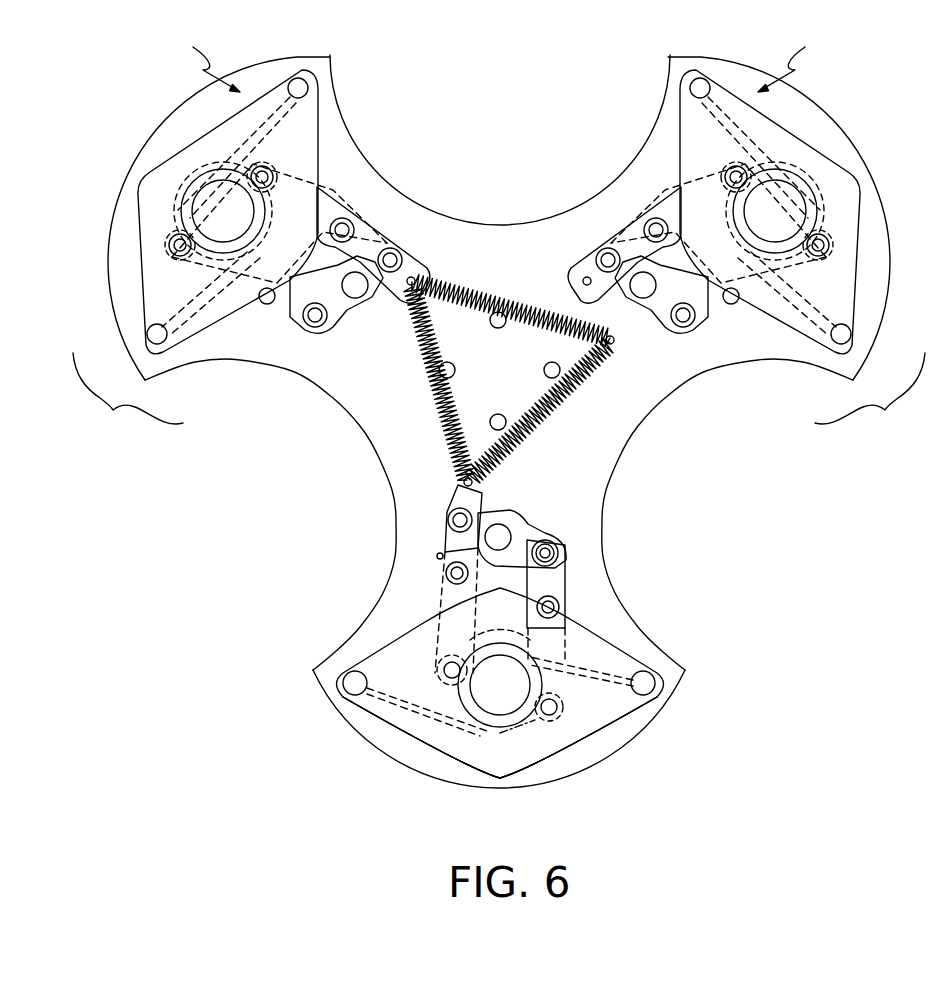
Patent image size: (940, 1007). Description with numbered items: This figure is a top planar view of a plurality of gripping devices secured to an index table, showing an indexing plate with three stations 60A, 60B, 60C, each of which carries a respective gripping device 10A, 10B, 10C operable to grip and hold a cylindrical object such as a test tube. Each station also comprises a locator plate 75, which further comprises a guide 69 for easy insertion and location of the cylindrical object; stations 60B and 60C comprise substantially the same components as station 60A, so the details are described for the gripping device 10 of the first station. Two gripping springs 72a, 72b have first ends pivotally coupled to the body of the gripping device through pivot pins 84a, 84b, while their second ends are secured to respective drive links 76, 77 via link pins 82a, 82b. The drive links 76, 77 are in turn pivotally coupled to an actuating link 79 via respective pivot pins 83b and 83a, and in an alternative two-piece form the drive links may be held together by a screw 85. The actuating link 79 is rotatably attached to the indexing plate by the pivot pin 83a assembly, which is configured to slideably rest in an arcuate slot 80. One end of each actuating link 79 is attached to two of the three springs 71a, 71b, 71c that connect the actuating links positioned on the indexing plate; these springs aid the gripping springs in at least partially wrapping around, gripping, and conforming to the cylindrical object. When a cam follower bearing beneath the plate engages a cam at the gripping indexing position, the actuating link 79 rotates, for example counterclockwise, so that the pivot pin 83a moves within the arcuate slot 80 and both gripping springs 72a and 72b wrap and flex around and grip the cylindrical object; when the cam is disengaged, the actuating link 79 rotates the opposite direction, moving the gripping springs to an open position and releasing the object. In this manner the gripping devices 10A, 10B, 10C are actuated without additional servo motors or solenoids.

The gripping device 10 is at (284, 522).
The gripping device 10A is at (366, 722).
The gripping device 10B is at (283, 189).
The gripping device 10C is at (716, 189).
The station 60A is at (745, 607).
The station 60B is at (234, 363).
The station 60C is at (763, 363).
The guide 69 is at (497, 735).
The spring 71a is at (425, 383).
The spring 71b is at (530, 300).
The spring 71c is at (553, 418).
The gripping spring 72a is at (400, 720).
The gripping spring 72b is at (600, 645).
The locator plate 75 is at (537, 750).
The drive link 76 is at (568, 590).
The drive link 77 is at (440, 610).
The actuating link 79 is at (525, 530).
The arcuate slot 80 is at (438, 556).
The link pin 82a is at (440, 665).
The link pin 82b is at (580, 712).
The pivot pin 83a is at (448, 520).
The pivot pin 83b is at (558, 553).
The pivot pin 84a is at (343, 683).
The pivot pin 84b is at (655, 683).
The screw 85 is at (500, 524).